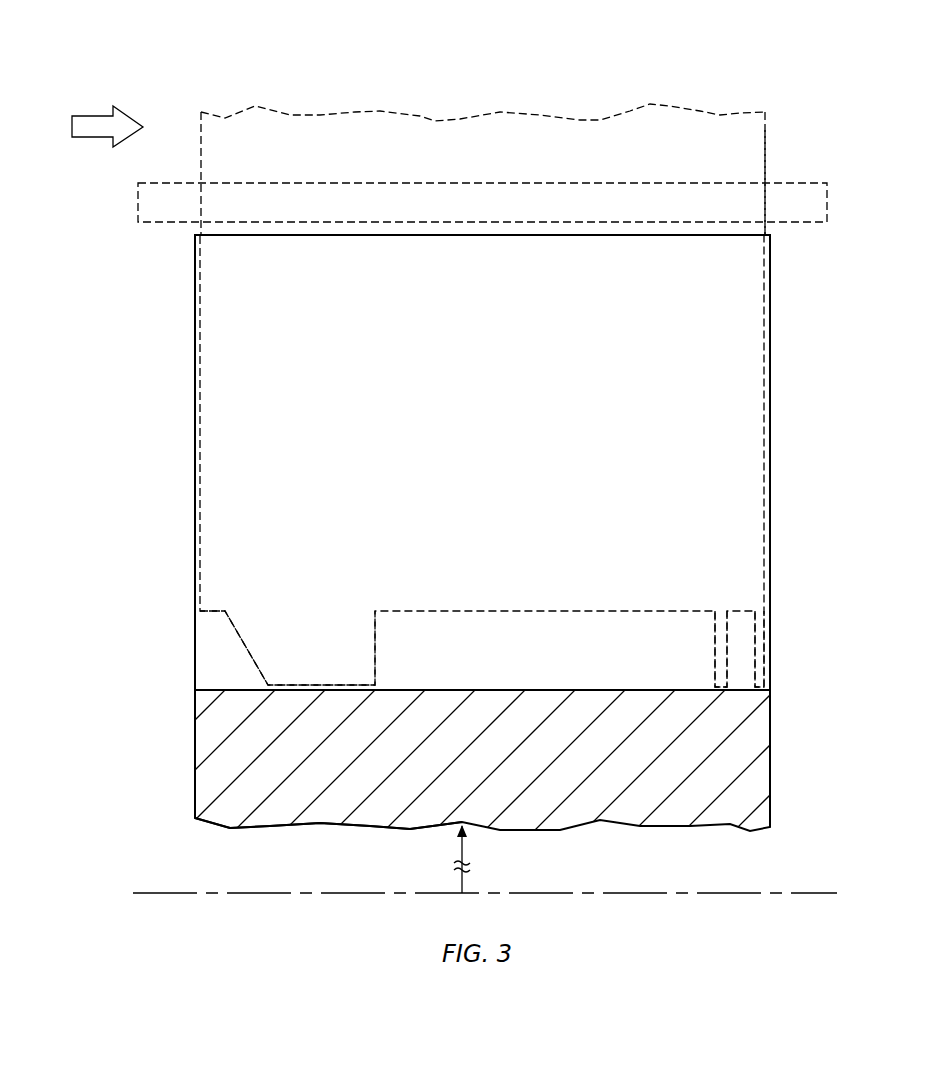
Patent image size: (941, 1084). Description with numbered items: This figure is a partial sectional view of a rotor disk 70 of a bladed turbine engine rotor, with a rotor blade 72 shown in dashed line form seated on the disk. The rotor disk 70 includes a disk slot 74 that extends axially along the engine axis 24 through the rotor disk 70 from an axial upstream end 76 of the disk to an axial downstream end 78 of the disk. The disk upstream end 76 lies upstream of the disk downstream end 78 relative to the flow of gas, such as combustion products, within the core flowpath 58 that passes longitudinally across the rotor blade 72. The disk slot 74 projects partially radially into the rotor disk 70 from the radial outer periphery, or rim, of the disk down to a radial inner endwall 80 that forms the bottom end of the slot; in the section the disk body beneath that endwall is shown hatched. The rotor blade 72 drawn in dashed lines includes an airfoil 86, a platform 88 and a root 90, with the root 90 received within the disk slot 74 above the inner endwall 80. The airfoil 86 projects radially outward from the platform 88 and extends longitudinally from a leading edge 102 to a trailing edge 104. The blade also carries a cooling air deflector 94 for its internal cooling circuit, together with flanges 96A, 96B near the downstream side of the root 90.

The axis 24 is at (145, 892).
The core flowpath 58 is at (178, 109).
The rotor disk 70 is at (182, 802).
The rotor blade 72 is at (778, 103).
The disk slot 74 is at (202, 657).
The axial upstream end 76 is at (195, 815).
The axial downstream end 78 is at (770, 812).
The radial inner endwall 80 is at (483, 690).
The airfoil 86 is at (770, 145).
The platform 88 is at (828, 205).
The root 90 is at (772, 293).
The cooling air deflector 94 is at (224, 631).
The flange 96A is at (711, 660).
The flange 96B is at (772, 660).
The leading edge 102 is at (200, 130).
The trailing edge 104 is at (767, 128).